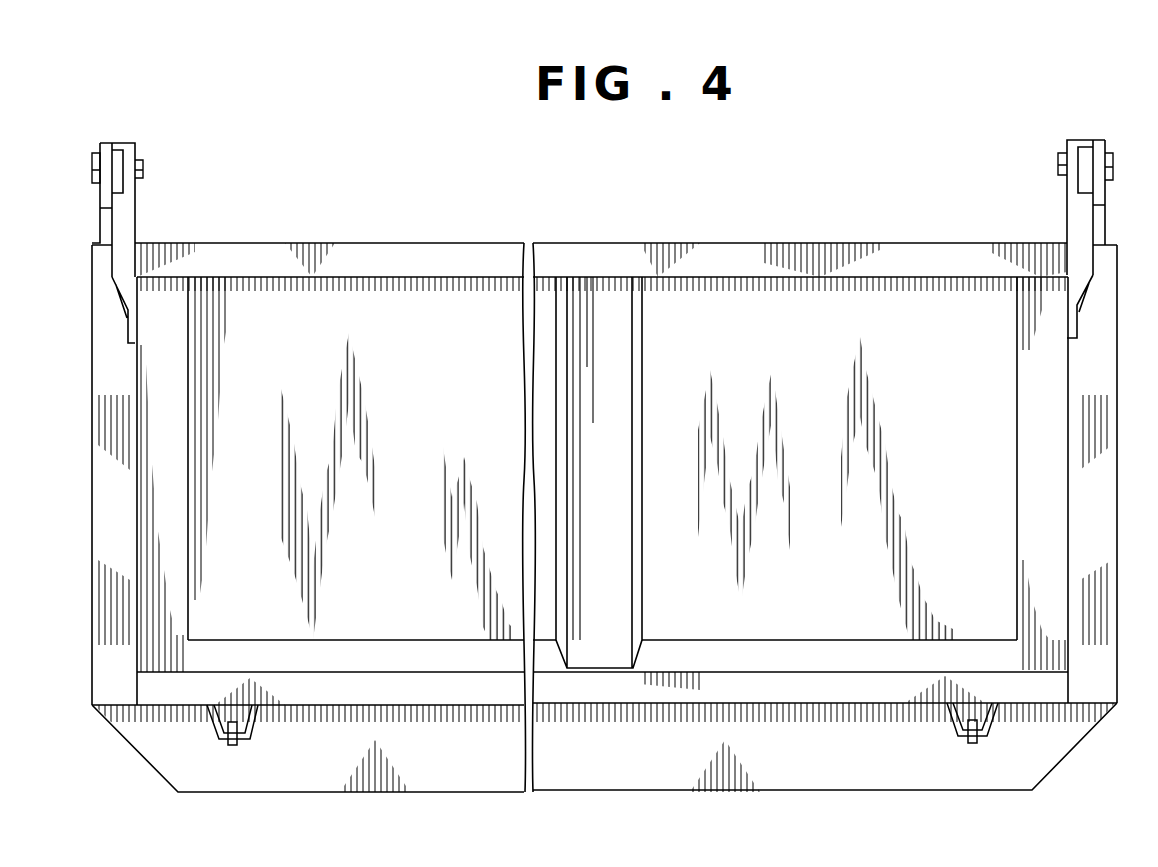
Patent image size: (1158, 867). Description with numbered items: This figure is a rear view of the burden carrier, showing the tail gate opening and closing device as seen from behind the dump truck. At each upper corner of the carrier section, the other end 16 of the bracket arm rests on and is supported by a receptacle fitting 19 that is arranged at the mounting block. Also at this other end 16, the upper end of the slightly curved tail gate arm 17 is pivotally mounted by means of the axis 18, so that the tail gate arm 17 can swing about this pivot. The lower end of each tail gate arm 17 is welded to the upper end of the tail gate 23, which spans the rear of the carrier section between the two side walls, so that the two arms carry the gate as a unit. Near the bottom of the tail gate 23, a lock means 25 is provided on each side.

The other end of the bracket arm 16 is at (131, 153).
The tail gate arm 17 is at (120, 221).
The axis 18 is at (93, 164).
The receptacle fitting 19 is at (104, 205).
The tail gate 23 is at (875, 307).
The lock means 25 is at (252, 733).